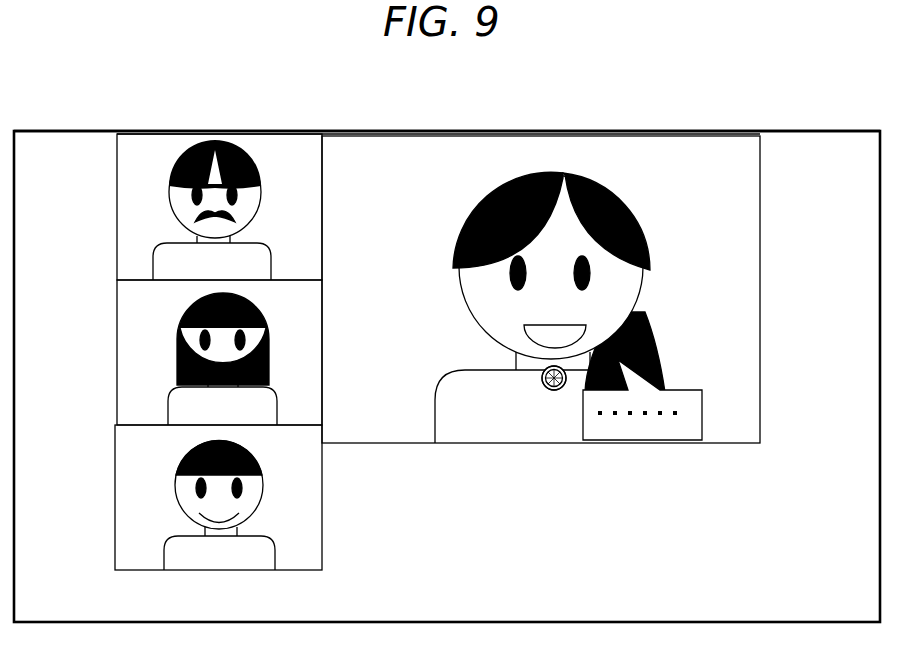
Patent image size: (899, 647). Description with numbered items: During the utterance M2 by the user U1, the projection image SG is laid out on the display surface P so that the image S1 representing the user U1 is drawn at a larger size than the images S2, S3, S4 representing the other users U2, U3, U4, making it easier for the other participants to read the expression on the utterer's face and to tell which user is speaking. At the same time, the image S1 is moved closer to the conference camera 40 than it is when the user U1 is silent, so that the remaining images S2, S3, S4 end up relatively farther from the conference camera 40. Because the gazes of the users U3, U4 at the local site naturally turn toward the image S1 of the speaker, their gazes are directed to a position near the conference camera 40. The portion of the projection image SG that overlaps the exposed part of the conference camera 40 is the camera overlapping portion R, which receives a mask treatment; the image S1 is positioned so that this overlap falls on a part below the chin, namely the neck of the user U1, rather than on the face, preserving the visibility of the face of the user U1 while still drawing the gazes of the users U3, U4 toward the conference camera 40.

The screen SG is at (51, 145).
The display image P is at (99, 131).
The second display mode M2 is at (256, 131).
The first display region S1 is at (678, 155).
The second display region S2 is at (130, 205).
The third display region S3 is at (132, 517).
The fourth display region S4 is at (132, 365).
The first user U1 is at (470, 212).
The second user U2 is at (178, 166).
The third user U3 is at (178, 468).
The fourth user U4 is at (178, 316).
The speaker indication region R is at (541, 379).
The speaking indicator 40 is at (553, 391).